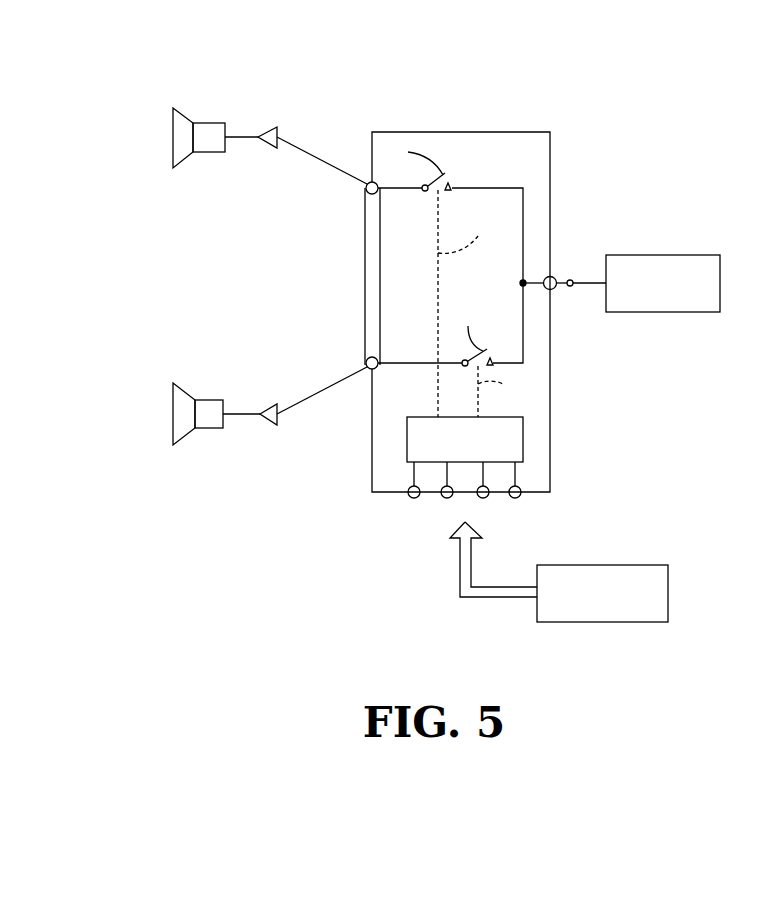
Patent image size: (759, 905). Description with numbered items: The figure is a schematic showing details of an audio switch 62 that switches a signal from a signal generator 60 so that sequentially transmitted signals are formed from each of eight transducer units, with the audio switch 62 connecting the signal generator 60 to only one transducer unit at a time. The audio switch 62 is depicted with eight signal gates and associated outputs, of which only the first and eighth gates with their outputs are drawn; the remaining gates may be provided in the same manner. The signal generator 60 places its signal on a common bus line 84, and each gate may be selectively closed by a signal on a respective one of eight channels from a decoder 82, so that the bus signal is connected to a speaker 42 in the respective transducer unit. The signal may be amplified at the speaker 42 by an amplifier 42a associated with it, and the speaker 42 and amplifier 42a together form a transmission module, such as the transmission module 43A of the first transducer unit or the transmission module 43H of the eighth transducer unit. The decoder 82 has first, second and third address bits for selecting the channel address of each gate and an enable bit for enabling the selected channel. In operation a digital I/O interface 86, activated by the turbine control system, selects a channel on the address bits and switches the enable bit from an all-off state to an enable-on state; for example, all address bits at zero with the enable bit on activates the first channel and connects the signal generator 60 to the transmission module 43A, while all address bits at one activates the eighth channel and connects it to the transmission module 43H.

The speaker 42 is at (192, 122).
The amplifier 42a is at (267, 128).
The transmission module 43A is at (236, 166).
The transmission module 43H is at (235, 386).
The signal generator 60 is at (663, 255).
The audio switch 62 is at (377, 516).
The decoder 82 is at (523, 435).
The common bus line 84 is at (523, 210).
The digital I/O interface 86 is at (583, 622).